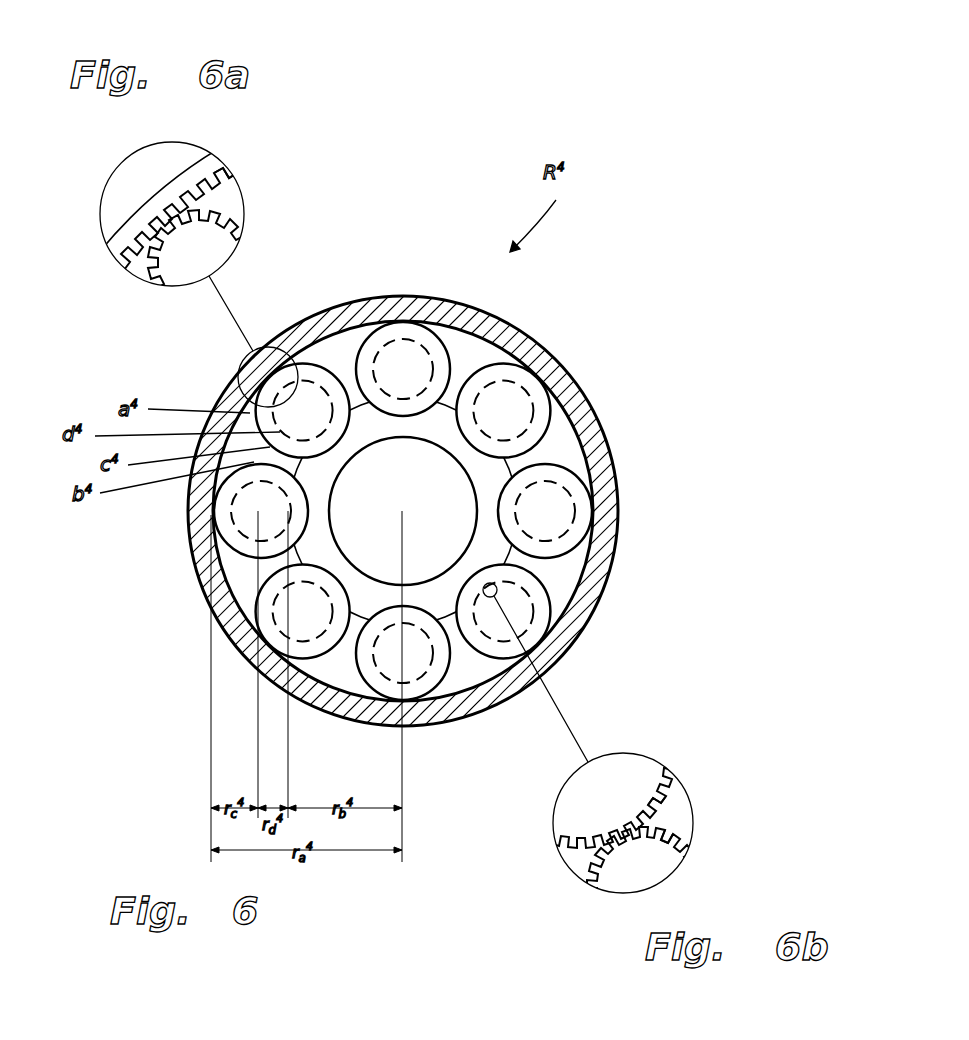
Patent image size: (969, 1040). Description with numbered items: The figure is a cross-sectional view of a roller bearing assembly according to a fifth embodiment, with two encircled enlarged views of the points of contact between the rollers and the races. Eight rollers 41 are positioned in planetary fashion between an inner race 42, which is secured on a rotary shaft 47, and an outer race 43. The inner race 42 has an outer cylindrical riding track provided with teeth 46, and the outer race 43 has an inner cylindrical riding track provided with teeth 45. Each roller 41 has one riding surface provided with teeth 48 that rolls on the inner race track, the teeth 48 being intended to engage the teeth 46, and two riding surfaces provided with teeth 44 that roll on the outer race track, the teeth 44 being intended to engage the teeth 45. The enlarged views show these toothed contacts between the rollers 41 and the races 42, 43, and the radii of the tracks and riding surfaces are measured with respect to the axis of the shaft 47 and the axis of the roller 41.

In FIG. 6, the rollers 41 is at (516, 407).
In FIG. 6a, the rollers 41 is at (168, 263).
In FIG. 6b, the rollers 41 is at (627, 880).
In FIG. 6, the inner race 42 is at (490, 478).
In FIG. 6b, the inner race 42 is at (575, 797).
In FIG. 6, the outer race 43 is at (207, 549).
In FIG. 6a, the outer race 43 is at (143, 213).
In FIG. 6a, the teeth 44 is at (150, 258).
In FIG. 6a, the teeth 45 is at (225, 195).
In FIG. 6b, the teeth 46 is at (647, 797).
In FIG. 6, the rotary shaft 47 is at (496, 586).
In FIG. 6b, the teeth 48 is at (670, 827).